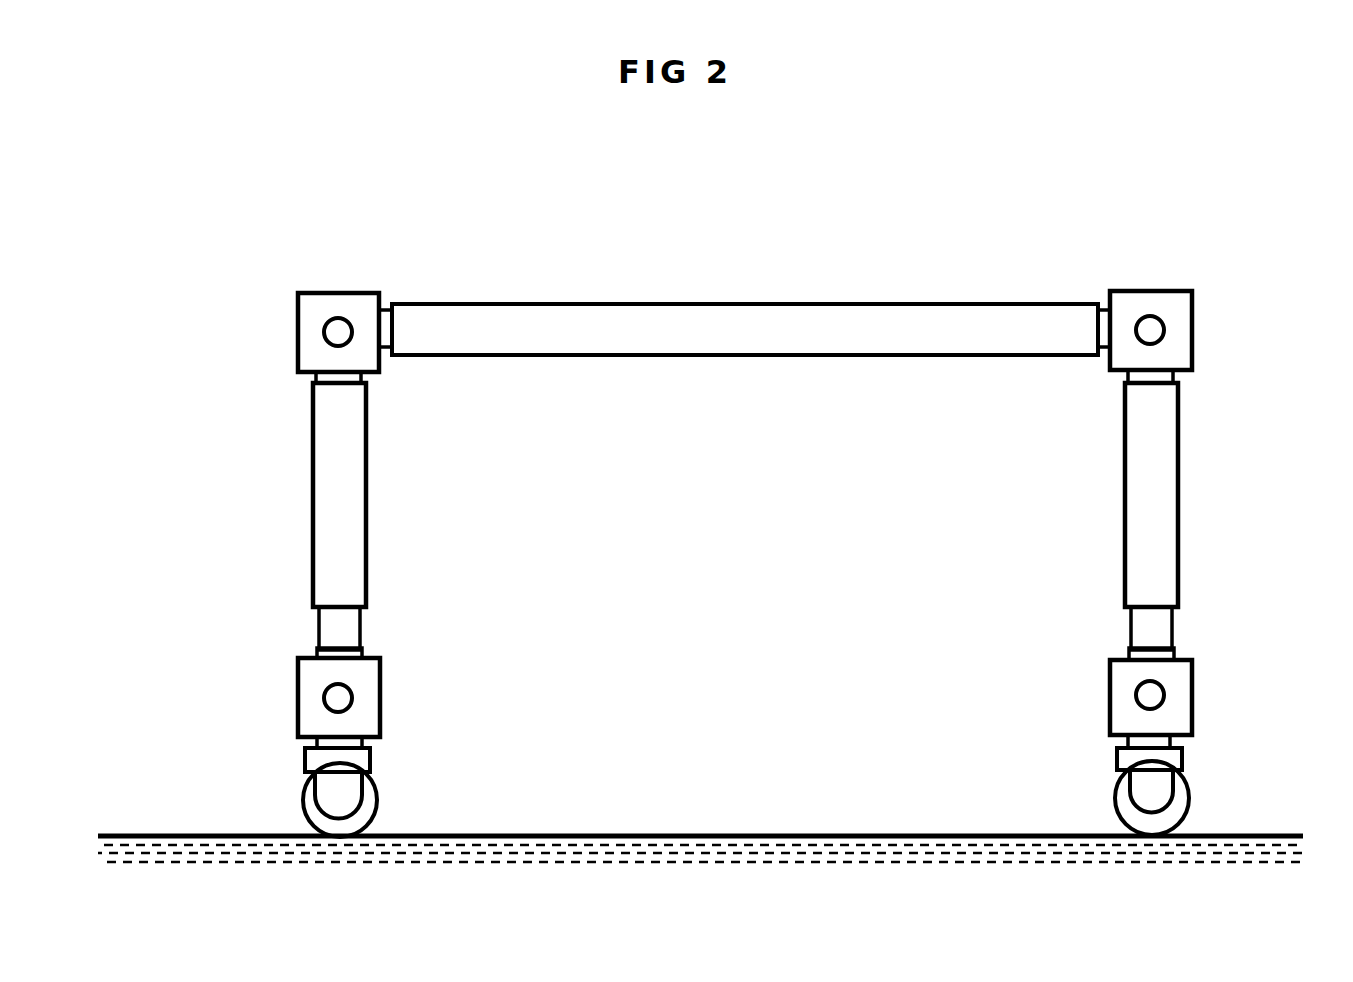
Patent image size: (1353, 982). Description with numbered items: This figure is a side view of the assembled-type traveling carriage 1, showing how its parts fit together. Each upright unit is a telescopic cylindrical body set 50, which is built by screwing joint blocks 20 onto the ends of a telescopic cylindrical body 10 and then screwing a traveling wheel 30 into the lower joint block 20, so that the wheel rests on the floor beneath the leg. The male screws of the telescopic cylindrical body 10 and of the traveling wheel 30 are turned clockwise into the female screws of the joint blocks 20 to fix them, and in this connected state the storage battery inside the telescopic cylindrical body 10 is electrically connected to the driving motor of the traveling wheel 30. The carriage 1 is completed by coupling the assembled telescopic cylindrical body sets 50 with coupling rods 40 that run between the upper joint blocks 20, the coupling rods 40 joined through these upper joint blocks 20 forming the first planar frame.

The assembled-type traveling carriage 1 is at (753, 228).
The telescopic cylindrical body 10 is at (330, 510).
The joint block 20 is at (313, 328).
The traveling wheel 30 is at (372, 818).
The coupling rod 40 is at (780, 327).
The telescopic cylindrical body set 50 is at (161, 295).